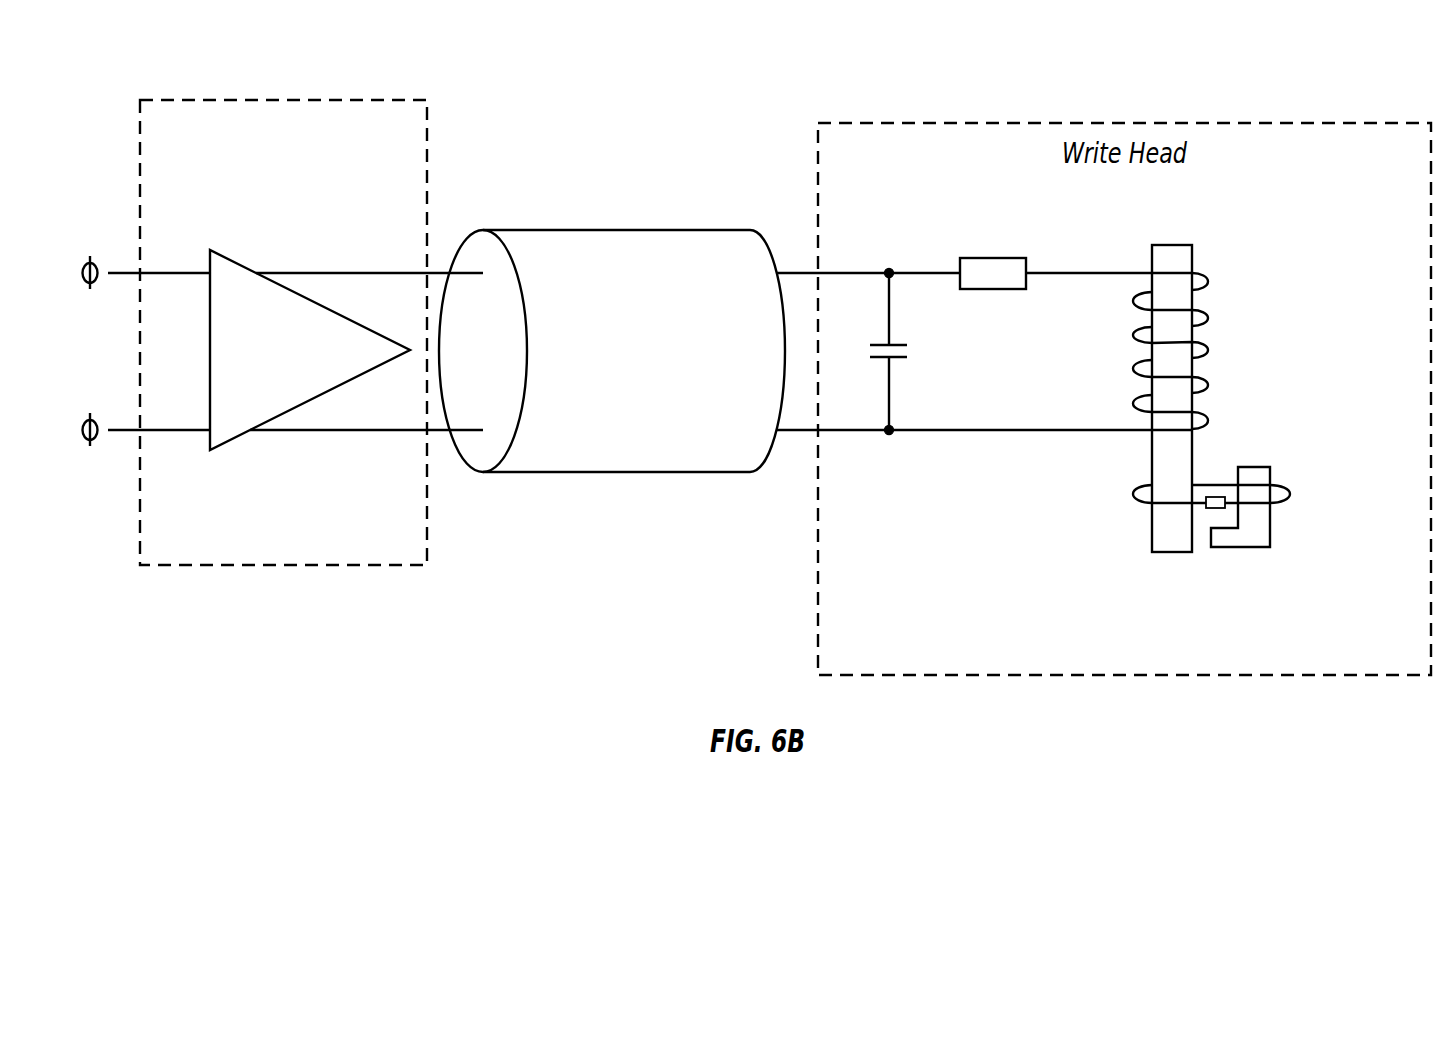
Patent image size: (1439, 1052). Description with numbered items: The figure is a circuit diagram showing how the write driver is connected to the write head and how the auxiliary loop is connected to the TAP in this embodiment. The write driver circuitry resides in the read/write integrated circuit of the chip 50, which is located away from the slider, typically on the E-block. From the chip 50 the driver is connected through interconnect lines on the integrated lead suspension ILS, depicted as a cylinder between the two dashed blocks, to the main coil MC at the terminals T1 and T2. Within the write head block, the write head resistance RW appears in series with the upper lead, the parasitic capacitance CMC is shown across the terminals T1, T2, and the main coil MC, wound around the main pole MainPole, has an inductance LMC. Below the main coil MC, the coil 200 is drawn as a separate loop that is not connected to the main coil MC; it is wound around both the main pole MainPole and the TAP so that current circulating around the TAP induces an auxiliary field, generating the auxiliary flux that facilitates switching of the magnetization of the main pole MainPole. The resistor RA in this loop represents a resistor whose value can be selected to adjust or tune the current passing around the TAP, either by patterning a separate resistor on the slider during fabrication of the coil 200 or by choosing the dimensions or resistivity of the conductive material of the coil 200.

The chip 50 is at (368, 101).
The coil 200 is at (1290, 494).
The integrated lead suspension ILS is at (612, 229).
The terminal T1 is at (889, 268).
The terminal T2 is at (889, 434).
The write head resistance RW is at (993, 255).
The parasitic capacitance CMC is at (914, 353).
The main coil inductance LMC is at (1092, 357).
The main coil MC is at (1208, 351).
The main pole MainPole is at (1170, 245).
The resistor RA is at (1212, 509).
The element TAP is at (1255, 528).